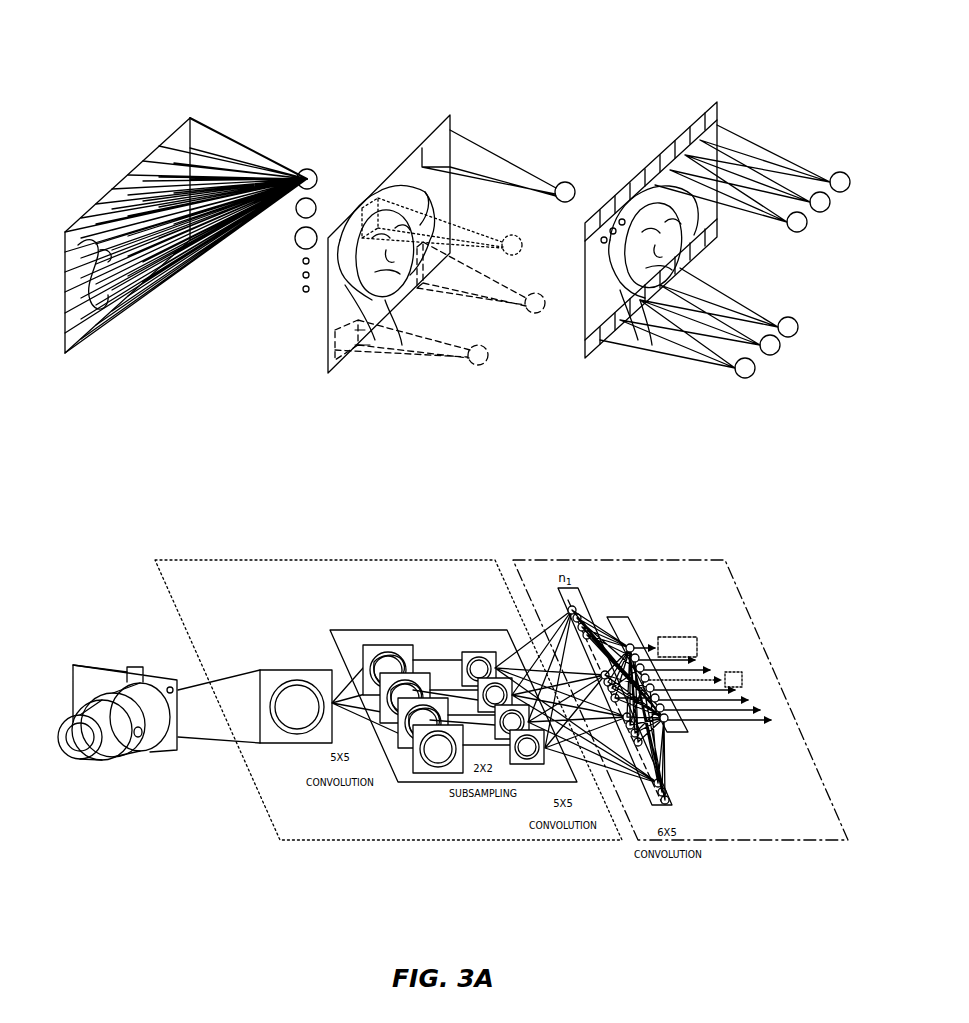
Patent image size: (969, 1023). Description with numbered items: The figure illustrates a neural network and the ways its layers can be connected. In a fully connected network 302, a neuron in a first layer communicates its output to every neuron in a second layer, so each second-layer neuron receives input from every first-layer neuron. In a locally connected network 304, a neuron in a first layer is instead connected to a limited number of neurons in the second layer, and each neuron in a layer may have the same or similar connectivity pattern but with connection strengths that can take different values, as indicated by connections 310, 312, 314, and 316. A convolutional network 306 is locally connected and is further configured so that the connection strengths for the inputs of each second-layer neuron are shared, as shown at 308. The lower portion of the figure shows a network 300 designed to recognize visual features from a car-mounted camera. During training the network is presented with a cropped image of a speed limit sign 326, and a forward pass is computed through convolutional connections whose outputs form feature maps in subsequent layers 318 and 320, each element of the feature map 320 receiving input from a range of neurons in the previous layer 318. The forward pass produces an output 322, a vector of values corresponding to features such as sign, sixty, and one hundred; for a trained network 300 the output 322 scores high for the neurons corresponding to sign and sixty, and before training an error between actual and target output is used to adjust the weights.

The network 300 is at (212, 530).
The fully connected network 302 is at (185, 82).
The locally connected network 304 is at (440, 83).
The convolutional network 306 is at (635, 82).
The shared connection strengths 308 is at (722, 297).
The connection strengths 310 is at (515, 170).
The connection strengths 312 is at (482, 226).
The connection strengths 314 is at (496, 298).
The connection strengths 316 is at (393, 352).
The feature map layer 318 is at (352, 568).
The feature map layer 320 is at (452, 568).
The output 322 is at (667, 582).
The cropped image of a speed limit sign 326 is at (290, 668).